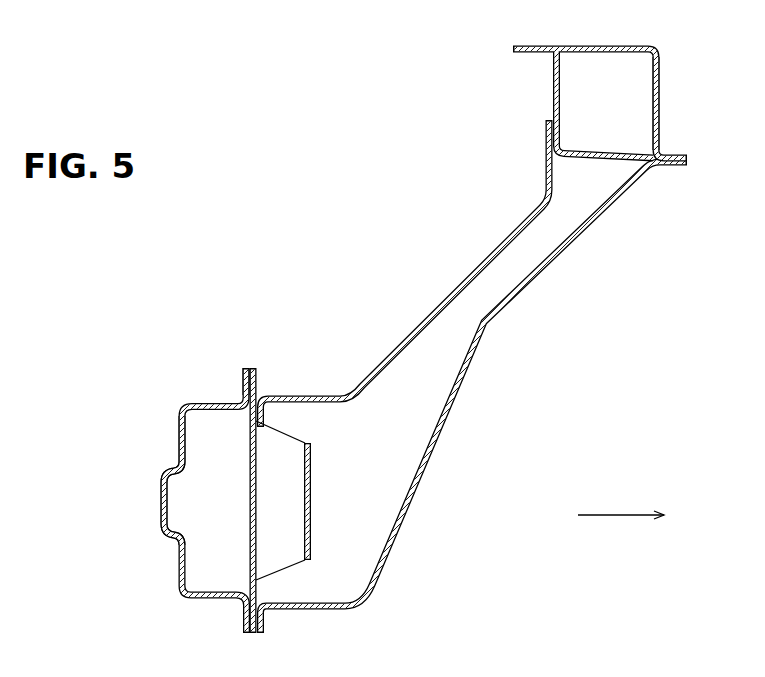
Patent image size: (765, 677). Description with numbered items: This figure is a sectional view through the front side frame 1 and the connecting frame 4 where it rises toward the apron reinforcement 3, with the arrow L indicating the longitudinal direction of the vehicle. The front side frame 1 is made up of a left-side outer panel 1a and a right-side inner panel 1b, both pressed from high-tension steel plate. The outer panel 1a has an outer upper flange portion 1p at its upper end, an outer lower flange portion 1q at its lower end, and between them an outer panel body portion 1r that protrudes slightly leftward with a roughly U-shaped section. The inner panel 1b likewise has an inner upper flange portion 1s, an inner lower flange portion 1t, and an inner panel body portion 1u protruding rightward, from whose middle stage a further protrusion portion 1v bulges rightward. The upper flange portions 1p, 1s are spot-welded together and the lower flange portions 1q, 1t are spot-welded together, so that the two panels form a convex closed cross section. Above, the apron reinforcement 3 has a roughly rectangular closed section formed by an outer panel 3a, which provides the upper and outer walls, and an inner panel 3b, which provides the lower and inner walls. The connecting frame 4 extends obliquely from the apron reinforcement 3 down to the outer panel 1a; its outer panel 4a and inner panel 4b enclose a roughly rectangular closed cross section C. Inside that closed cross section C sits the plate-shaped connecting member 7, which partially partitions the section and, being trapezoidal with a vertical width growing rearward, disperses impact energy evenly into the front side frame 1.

The front side frame 1 is at (223, 452).
The outer panel 1a is at (261, 589).
The inner panel 1b is at (175, 496).
The outer upper flange portion 1p is at (257, 379).
The outer lower flange portion 1q is at (264, 614).
The outer panel body portion 1r is at (249, 497).
The inner upper flange portion 1s is at (243, 377).
The inner lower flange portion 1t is at (243, 620).
The inner panel body portion 1u is at (178, 436).
The protrusion portion 1v is at (160, 500).
The apron reinforcement 3 is at (603, 102).
The outer panel 3a is at (660, 117).
The inner panel 3b is at (552, 89).
The connecting frame 4 is at (472, 379).
The outer panel 4a is at (474, 400).
The inner panel 4b is at (403, 273).
The connecting member 7 is at (292, 462).
The closed cross section C is at (380, 492).
The longitudinal direction L is at (617, 513).